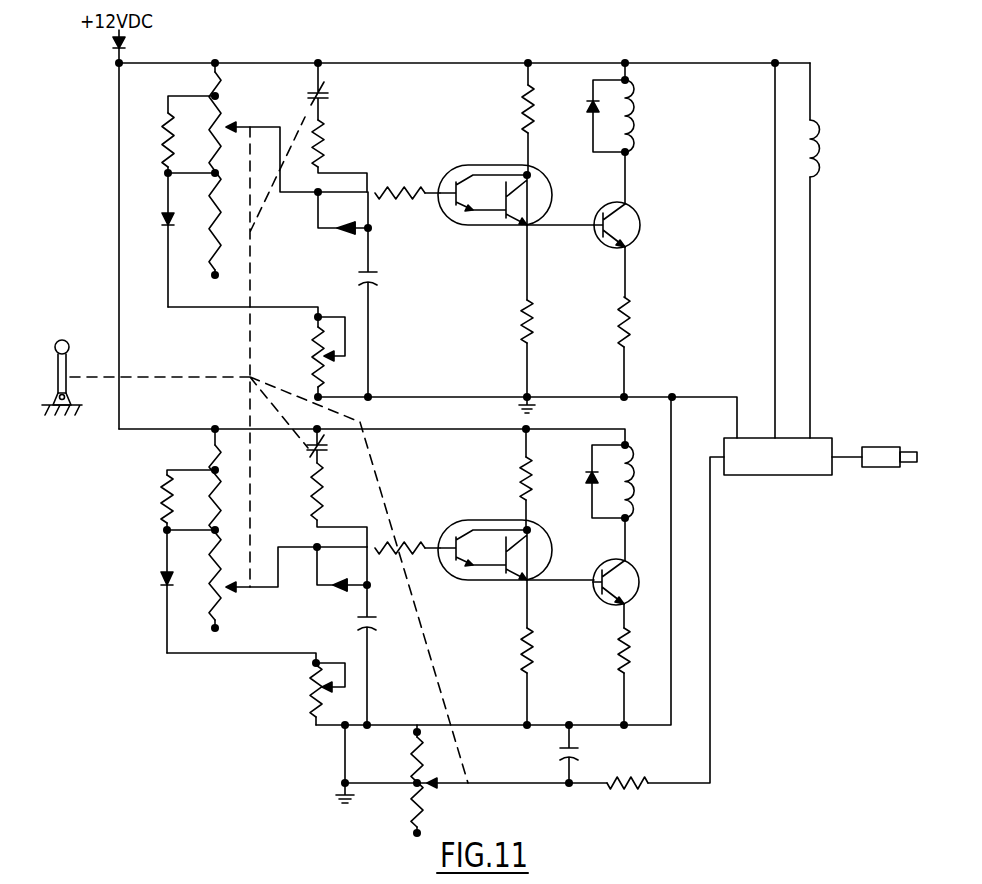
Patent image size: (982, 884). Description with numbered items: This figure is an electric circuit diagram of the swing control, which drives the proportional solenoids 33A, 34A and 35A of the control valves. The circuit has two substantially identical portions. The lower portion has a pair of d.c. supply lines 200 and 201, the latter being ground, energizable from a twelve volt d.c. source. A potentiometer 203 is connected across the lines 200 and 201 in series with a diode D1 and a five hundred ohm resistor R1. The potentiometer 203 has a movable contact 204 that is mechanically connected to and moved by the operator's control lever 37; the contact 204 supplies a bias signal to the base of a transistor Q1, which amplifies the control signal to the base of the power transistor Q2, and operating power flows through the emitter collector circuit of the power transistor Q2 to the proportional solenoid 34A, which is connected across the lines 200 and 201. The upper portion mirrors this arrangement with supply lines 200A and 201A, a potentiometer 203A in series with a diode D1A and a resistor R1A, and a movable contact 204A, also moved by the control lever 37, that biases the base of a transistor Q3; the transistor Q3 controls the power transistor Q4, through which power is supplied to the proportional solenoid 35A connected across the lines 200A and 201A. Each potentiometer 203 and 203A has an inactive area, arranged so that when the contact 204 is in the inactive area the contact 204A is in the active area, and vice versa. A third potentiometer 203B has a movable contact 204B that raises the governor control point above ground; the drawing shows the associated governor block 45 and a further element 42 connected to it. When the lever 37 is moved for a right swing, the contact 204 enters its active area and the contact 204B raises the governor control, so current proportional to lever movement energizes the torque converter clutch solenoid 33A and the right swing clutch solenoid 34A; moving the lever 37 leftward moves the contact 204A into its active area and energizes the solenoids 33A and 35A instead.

The d.c. supply line 200A is at (374, 63).
The potentiometer 203A is at (231, 112).
The movable contact 204A is at (296, 197).
The diode D1A is at (166, 221).
The resistor R1A is at (314, 339).
The d.c. supply line (ground) 201A is at (440, 396).
The transistor Q3 is at (478, 227).
The power transistor Q4 is at (636, 241).
The proportional solenoid 35A is at (635, 110).
The torque converter clutch solenoid 33A is at (819, 134).
The governor 45 is at (773, 477).
The switch 42 is at (882, 469).
The control lever 37 is at (56, 364).
The d.c. supply line 200 is at (186, 429).
The potentiometer 203 is at (235, 600).
The movable contact 204 is at (286, 546).
The diode D1 is at (160, 580).
The resistor R1 is at (310, 695).
The d.c. supply line (ground) 201 is at (647, 727).
The potentiometer 203B is at (412, 806).
The movable contact 204B is at (442, 787).
The transistor Q1 is at (485, 582).
The power transistor Q2 is at (600, 597).
The right swing clutch solenoid 34A is at (630, 473).